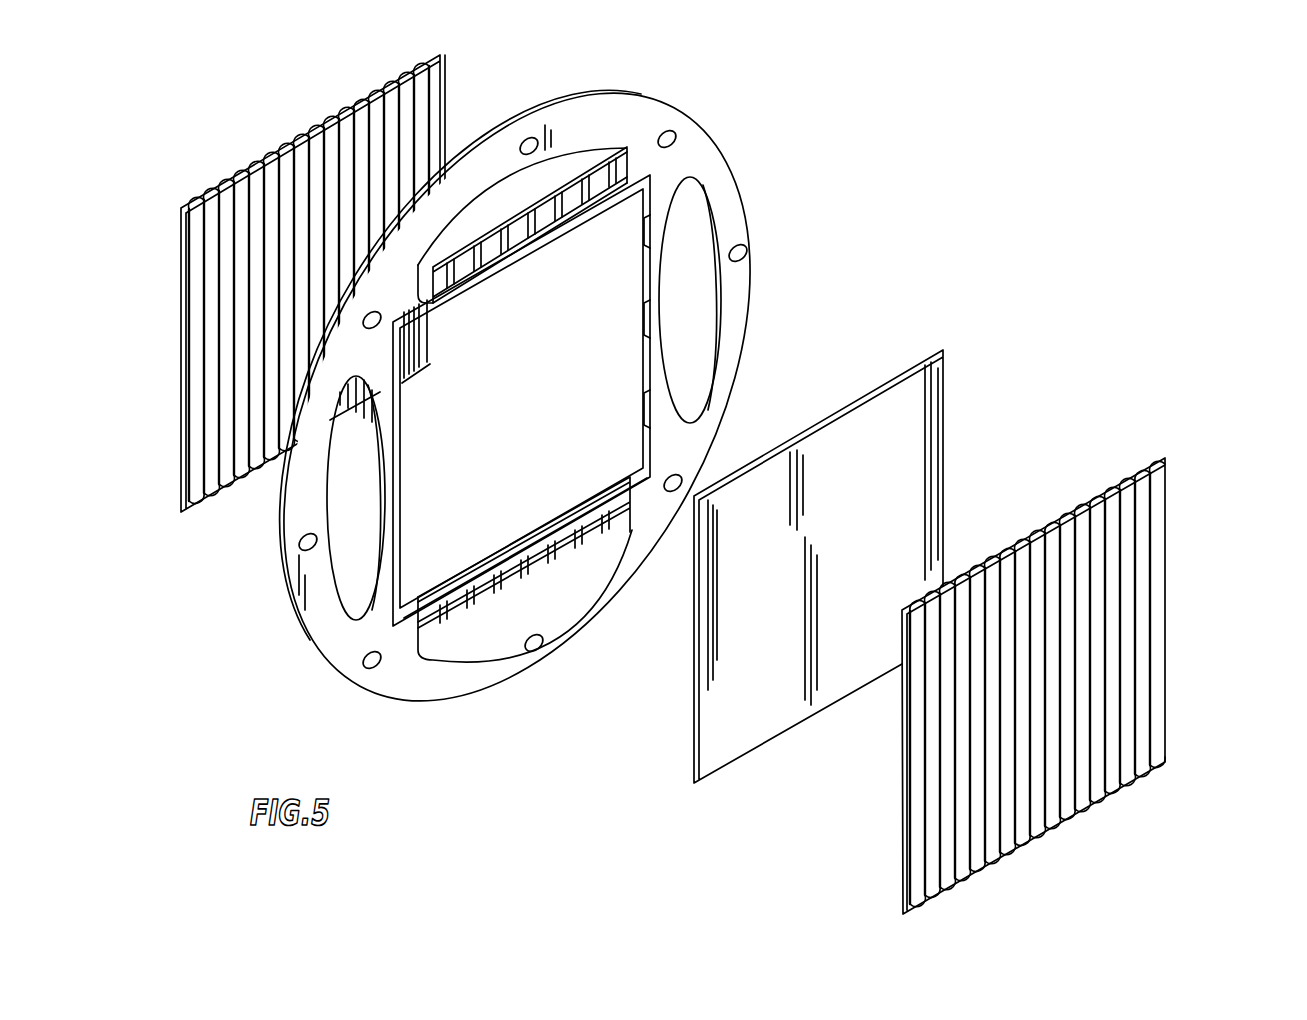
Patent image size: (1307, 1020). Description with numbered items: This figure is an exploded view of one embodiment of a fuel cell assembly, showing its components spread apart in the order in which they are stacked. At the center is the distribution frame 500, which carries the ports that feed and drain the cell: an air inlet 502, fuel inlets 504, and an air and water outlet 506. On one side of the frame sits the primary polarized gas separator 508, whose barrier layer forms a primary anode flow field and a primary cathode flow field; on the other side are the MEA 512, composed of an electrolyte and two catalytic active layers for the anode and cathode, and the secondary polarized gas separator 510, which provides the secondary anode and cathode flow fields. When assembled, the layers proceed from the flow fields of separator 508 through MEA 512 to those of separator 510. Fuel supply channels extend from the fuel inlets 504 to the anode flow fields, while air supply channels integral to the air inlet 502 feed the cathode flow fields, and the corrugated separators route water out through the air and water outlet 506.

The distribution frame 500 is at (738, 154).
The air inlet 502 is at (700, 315).
The fuel inlets 504 is at (557, 174).
The air and water outlet 506 is at (357, 499).
The primary polarized gas separator 508 is at (451, 56).
The secondary polarized gas separator 510 is at (1170, 456).
The MEA 512 is at (946, 347).